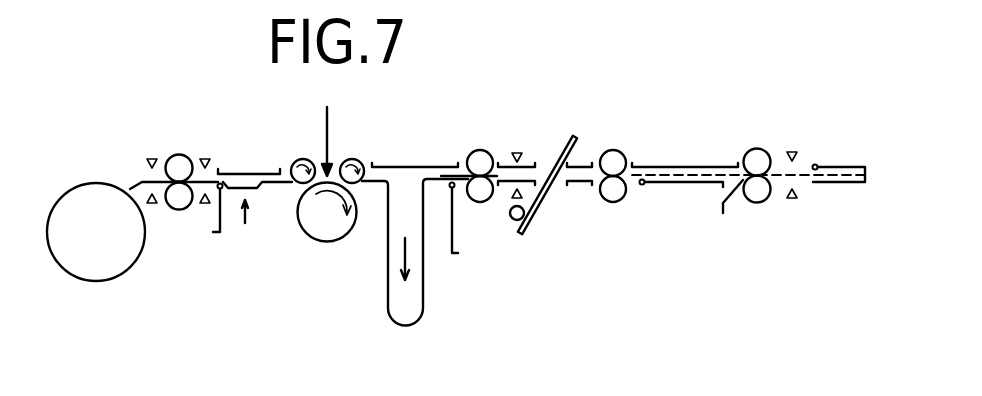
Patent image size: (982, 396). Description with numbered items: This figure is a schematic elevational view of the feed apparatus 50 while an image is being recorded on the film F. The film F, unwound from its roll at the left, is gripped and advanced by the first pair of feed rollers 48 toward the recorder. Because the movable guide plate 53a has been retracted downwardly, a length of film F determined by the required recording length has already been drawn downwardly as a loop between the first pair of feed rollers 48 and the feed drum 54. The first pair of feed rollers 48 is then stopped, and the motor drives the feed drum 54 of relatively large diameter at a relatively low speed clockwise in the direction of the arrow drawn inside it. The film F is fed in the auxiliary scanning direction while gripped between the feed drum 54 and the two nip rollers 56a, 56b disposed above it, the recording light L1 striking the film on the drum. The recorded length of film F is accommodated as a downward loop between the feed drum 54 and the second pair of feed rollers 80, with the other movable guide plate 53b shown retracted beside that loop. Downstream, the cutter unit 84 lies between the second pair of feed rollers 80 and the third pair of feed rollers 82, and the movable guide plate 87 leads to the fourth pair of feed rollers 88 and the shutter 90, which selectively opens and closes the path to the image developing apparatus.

The film F is at (108, 277).
The exposure light beam L1 is at (330, 118).
The first pair of feed rollers 48 is at (182, 154).
The movable guide plate 53a is at (218, 215).
The movable guide plate 53b is at (453, 236).
The feed drum 54 is at (325, 240).
The nip roller 56a is at (300, 160).
The nip roller 56b is at (358, 160).
The feed apparatus 50 is at (305, 252).
The second pair of feed rollers 80 is at (479, 151).
The cutter unit 84 is at (566, 148).
The third pair of feed rollers 82 is at (612, 150).
The movable guide plate 87 is at (680, 185).
The fourth pair of feed rollers 88 is at (757, 148).
The shutter 90 is at (842, 163).